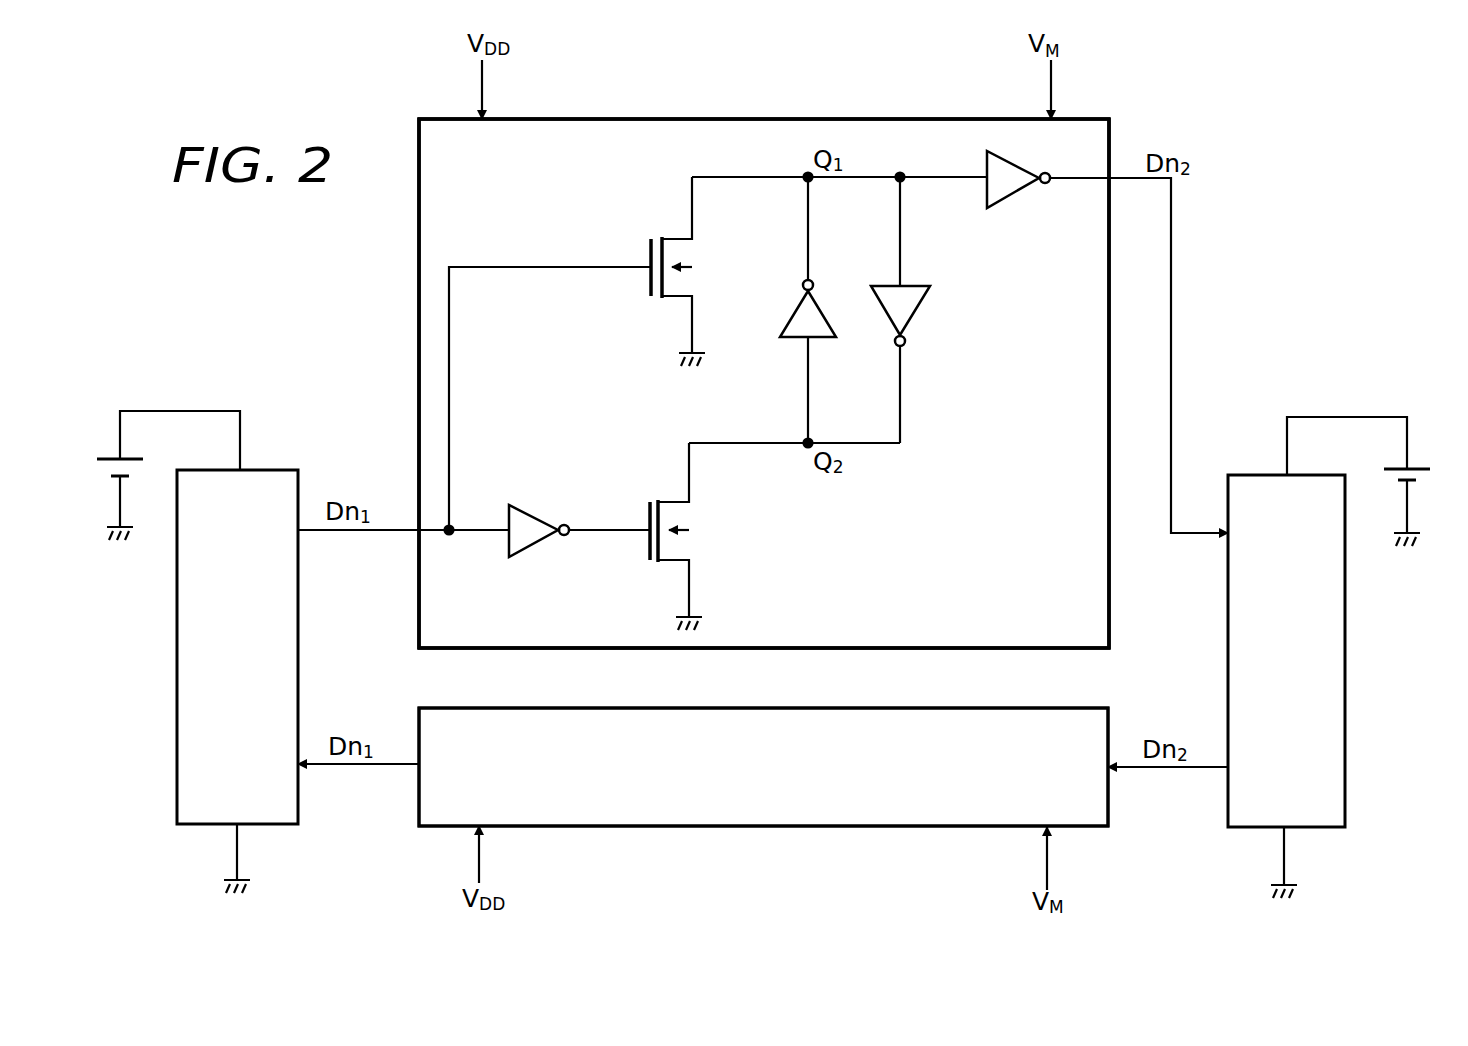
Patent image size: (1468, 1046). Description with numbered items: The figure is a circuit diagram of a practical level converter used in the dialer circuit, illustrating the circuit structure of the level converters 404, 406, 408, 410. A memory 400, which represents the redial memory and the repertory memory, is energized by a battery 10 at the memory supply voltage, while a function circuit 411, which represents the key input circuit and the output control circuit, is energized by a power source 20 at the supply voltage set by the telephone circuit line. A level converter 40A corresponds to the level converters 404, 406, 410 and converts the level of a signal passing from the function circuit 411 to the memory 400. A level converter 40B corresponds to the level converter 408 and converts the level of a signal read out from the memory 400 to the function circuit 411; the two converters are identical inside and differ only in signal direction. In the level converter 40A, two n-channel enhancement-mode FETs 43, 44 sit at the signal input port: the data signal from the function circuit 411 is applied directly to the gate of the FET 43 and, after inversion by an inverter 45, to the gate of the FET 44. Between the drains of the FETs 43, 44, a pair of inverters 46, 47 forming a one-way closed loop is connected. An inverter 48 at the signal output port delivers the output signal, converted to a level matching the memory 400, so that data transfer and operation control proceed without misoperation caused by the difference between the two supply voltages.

The battery 10 is at (1413, 468).
The power source 20 is at (113, 457).
The level converter 40A is at (613, 118).
The level converter 404 is at (764, 383).
The level converter 406 is at (764, 383).
The level converter 410 is at (764, 383).
The level converter 40B is at (713, 827).
The level converter 408 is at (763, 767).
The FET 43 is at (650, 296).
The FET 44 is at (647, 553).
The inverter 45 is at (525, 510).
The inverter 46 is at (795, 338).
The inverter 47 is at (915, 314).
The inverter 48 is at (1009, 198).
The memory 400 is at (1345, 717).
The function circuit 411 is at (177, 690).